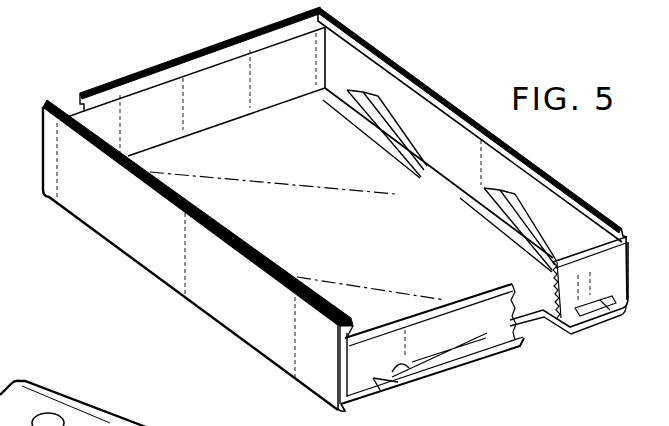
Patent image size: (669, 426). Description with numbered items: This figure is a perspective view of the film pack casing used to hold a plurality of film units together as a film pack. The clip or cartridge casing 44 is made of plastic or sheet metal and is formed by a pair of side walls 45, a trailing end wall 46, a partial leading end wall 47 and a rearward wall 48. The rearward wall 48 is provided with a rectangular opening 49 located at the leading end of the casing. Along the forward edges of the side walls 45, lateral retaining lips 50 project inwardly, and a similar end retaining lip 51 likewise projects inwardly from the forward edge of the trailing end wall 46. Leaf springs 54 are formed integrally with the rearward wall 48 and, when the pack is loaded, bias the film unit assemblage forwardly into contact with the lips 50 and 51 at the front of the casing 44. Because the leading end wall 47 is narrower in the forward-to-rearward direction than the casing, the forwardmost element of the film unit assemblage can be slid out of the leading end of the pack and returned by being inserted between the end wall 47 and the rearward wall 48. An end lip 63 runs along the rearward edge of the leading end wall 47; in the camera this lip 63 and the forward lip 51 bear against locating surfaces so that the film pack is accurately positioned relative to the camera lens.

The cartridge casing 44 is at (612, 206).
The side walls 45 is at (153, 247).
The trailing end wall 46 is at (205, 108).
The partial leading end wall 47 is at (457, 322).
The rearward wall 48 is at (358, 228).
The rectangular opening 49 is at (534, 316).
The lateral retaining lips 50 is at (199, 208).
The end retaining lip 51 is at (128, 84).
The leaf springs 54 is at (367, 100).
The end lip 63 is at (413, 367).